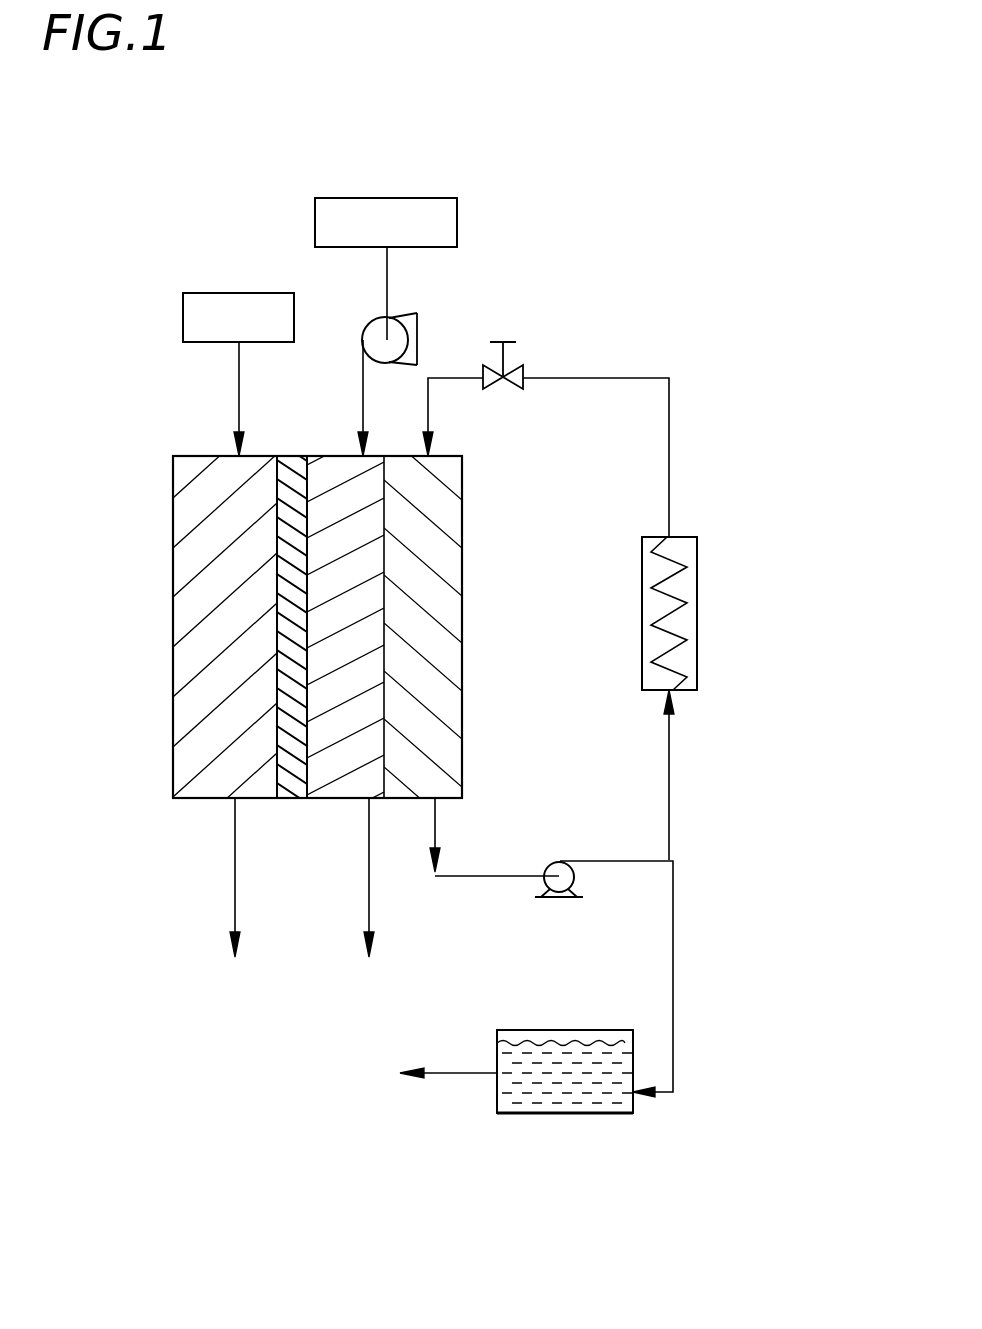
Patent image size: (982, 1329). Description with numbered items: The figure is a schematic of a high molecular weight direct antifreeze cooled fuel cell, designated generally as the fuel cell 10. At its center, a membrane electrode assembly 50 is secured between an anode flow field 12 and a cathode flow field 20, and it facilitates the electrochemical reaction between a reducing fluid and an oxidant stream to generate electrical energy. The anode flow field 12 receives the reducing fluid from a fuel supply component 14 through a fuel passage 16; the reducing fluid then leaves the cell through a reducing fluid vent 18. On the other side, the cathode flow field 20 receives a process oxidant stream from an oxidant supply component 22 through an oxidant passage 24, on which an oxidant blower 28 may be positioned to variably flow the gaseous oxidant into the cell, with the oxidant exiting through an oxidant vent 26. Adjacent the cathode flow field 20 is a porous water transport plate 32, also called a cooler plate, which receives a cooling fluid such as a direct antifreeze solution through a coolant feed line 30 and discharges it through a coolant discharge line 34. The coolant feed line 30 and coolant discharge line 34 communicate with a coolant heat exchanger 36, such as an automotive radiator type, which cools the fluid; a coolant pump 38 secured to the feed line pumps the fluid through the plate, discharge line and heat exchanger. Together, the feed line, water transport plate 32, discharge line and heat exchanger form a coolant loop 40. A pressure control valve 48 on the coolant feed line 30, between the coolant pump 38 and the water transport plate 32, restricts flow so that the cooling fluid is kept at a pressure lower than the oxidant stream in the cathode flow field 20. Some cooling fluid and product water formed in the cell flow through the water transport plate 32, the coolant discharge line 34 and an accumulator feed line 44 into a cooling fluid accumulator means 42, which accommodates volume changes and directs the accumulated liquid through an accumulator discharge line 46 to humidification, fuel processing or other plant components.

The direct antifreeze cooled fuel cell 10 is at (128, 541).
The anode flow field 12 is at (172, 630).
The fuel supply component 14 is at (212, 300).
The fuel passage 16 is at (238, 377).
The reducing fluid vent 18 is at (235, 893).
The cathode flow field 20 is at (342, 463).
The oxidant supply component 22 is at (372, 198).
The oxidant passage 24 is at (388, 273).
The oxidant vent 26 is at (370, 910).
The oxidant blower 28 is at (377, 337).
The coolant feed line 30 is at (445, 378).
The water transport plate 32 is at (445, 565).
The coolant discharge line 34 is at (437, 832).
The coolant heat exchanger 36 is at (688, 620).
The coolant pump 38 is at (565, 870).
The coolant loop 40 is at (702, 444).
The cooling fluid accumulator means 42 is at (603, 1102).
The accumulator feed line 44 is at (673, 957).
The accumulator discharge line 46 is at (443, 1073).
The pressure control valve 48 is at (487, 387).
The membrane electrode assembly 50 is at (297, 795).